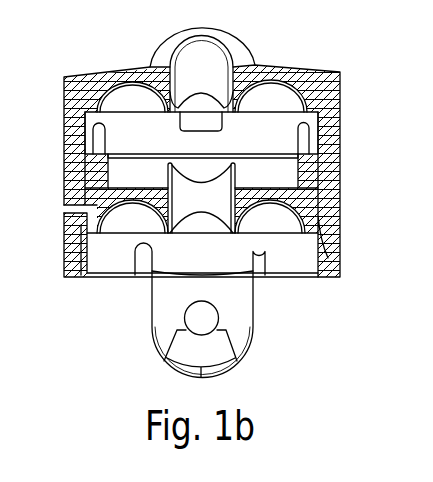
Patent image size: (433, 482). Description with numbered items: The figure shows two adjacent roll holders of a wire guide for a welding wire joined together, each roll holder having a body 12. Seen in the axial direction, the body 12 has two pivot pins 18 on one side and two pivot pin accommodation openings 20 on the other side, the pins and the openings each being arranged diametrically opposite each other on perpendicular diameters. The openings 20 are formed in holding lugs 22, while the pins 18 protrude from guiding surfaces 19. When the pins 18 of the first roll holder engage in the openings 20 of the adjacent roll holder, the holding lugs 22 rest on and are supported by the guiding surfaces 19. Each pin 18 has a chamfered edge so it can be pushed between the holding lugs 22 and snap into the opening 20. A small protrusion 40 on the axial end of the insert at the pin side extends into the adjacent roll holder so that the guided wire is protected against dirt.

The body 12 is at (342, 73).
The pivot pin 18 is at (340, 196).
The guiding surface 19 is at (220, 57).
The pivot pin accommodation opening 20 is at (184, 321).
The holding lug 22 is at (64, 240).
The protrusion 40 is at (243, 160).